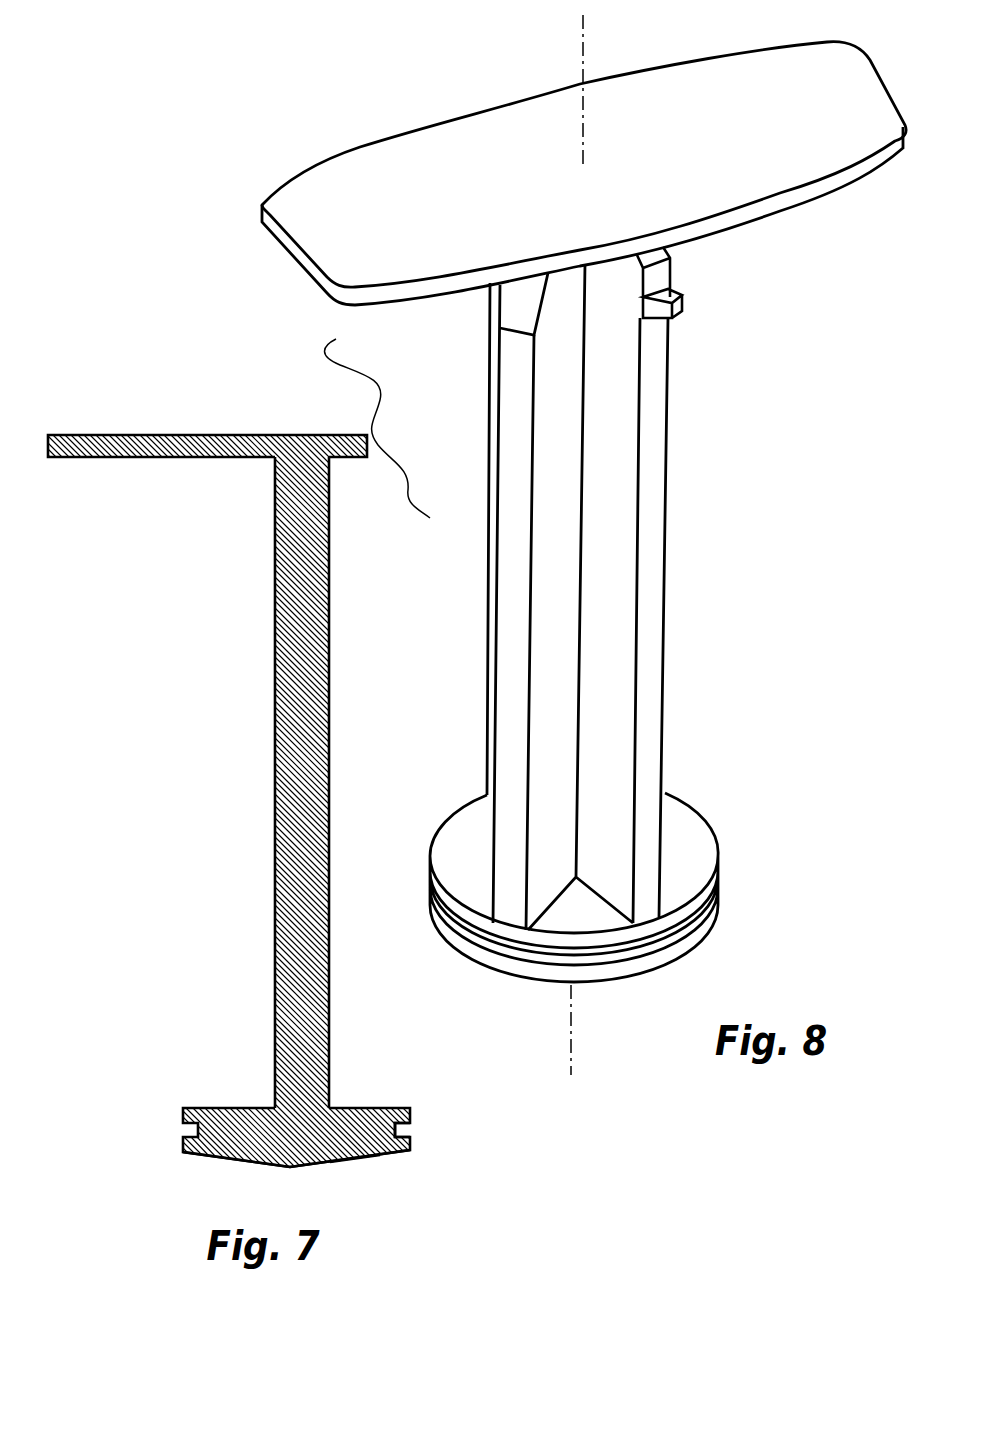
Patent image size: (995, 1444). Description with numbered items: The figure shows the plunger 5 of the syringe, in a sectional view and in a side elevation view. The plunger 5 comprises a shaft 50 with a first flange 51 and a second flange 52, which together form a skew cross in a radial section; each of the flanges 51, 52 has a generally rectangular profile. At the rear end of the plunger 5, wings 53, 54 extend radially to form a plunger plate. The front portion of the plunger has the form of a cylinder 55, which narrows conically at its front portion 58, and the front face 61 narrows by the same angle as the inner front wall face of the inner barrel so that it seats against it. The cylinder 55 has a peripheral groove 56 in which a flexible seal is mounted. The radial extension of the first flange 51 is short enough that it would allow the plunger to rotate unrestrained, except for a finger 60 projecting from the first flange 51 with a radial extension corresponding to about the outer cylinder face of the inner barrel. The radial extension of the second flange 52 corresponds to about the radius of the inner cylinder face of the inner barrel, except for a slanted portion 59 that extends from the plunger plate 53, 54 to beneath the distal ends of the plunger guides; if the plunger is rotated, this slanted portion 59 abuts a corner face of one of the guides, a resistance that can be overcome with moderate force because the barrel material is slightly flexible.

In FIG. 7, the plunger 5 is at (286, 805).
In FIG. 8, the plunger 5 is at (521, 545).
In FIG. 7, the shaft 50 is at (287, 707).
In FIG. 8, the first flange 51 is at (667, 588).
In FIG. 8, the second flange 52 is at (466, 601).
In FIG. 8, the wing 53 is at (762, 157).
In FIG. 7, the wing 54 is at (84, 434).
In FIG. 8, the wing 54 is at (337, 237).
In FIG. 7, the cylinder 55 is at (300, 1137).
In FIG. 8, the cylinder 55 is at (682, 838).
In FIG. 7, the peripheral groove 56 is at (405, 1128).
In FIG. 7, the front portion 58 is at (247, 1160).
In FIG. 8, the slanted portion 59 is at (525, 302).
In FIG. 8, the finger 60 is at (655, 308).
In FIG. 7, the front face 61 is at (360, 1166).